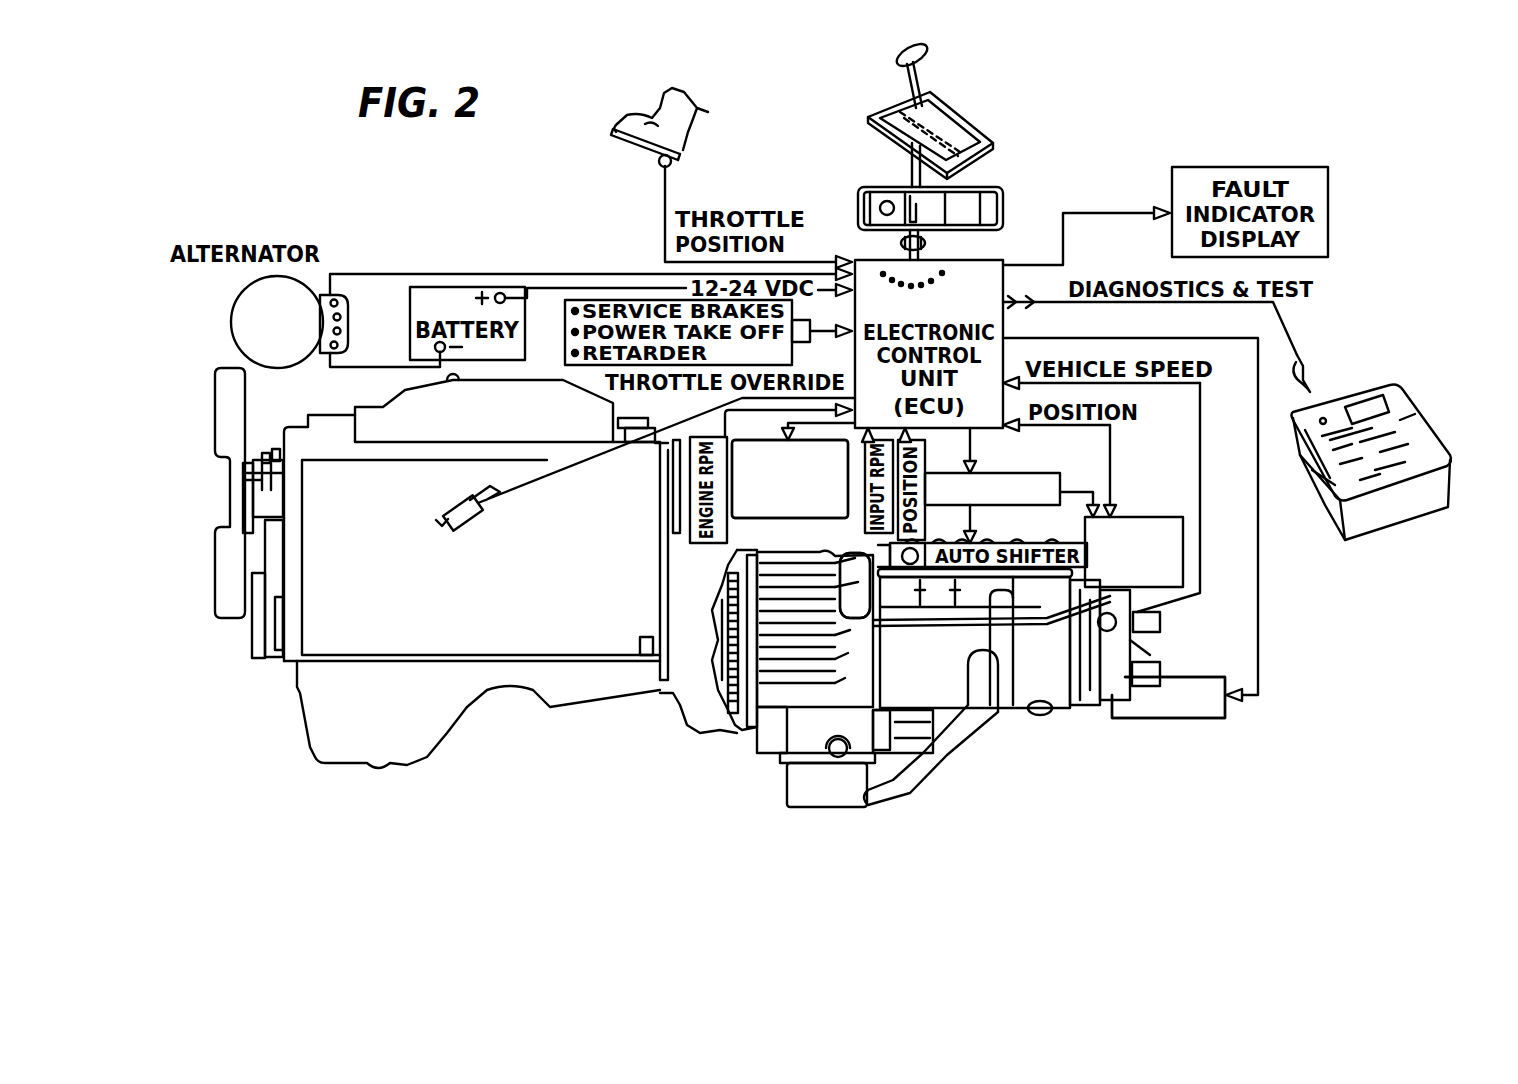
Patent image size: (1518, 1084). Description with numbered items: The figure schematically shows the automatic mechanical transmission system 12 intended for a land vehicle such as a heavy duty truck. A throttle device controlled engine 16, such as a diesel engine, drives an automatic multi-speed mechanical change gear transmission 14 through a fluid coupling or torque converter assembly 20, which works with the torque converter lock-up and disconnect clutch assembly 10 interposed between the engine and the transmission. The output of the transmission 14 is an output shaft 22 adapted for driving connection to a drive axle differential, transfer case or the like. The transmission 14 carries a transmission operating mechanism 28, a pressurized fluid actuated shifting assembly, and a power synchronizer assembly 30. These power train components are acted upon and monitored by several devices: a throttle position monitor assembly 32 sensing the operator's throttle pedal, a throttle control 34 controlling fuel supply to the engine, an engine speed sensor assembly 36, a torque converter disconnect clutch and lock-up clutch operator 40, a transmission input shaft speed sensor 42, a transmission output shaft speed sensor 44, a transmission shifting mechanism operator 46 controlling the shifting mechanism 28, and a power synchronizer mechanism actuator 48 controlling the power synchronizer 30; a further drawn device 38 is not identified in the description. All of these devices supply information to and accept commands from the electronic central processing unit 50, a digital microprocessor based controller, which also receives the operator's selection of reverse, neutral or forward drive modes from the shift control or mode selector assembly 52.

The torque converter lock-up and disconnect clutch assembly 10 is at (697, 703).
The automatic mechanical transmission system 12 is at (1092, 138).
The automatic multi-speed mechanical change gear transmission 14 is at (999, 716).
The throttle device controlled engine 16 is at (481, 557).
The fluid coupling or torque converter assembly 20 is at (752, 745).
The output shaft 22 is at (1150, 667).
The transmission operating mechanism 28 is at (1048, 540).
The power synchronizer assembly 30 is at (1212, 702).
The throttle position monitor assembly 32 is at (670, 188).
The throttle control 34 is at (430, 532).
The engine speed sensor assembly 36 is at (722, 558).
The clutch control valve 38 is at (792, 518).
The torque converter disconnect clutch and lock-up clutch operator 40 is at (845, 518).
The transmission input shaft speed sensor 42 is at (853, 580).
The transmission output shaft speed sensor 44 is at (1100, 650).
The transmission shifting mechanism operator 46 is at (1033, 474).
The power synchronizer mechanism actuator 48 is at (1203, 708).
The electronic central processing unit 50 is at (1030, 217).
The shift control or mode selector assembly 52 is at (977, 116).